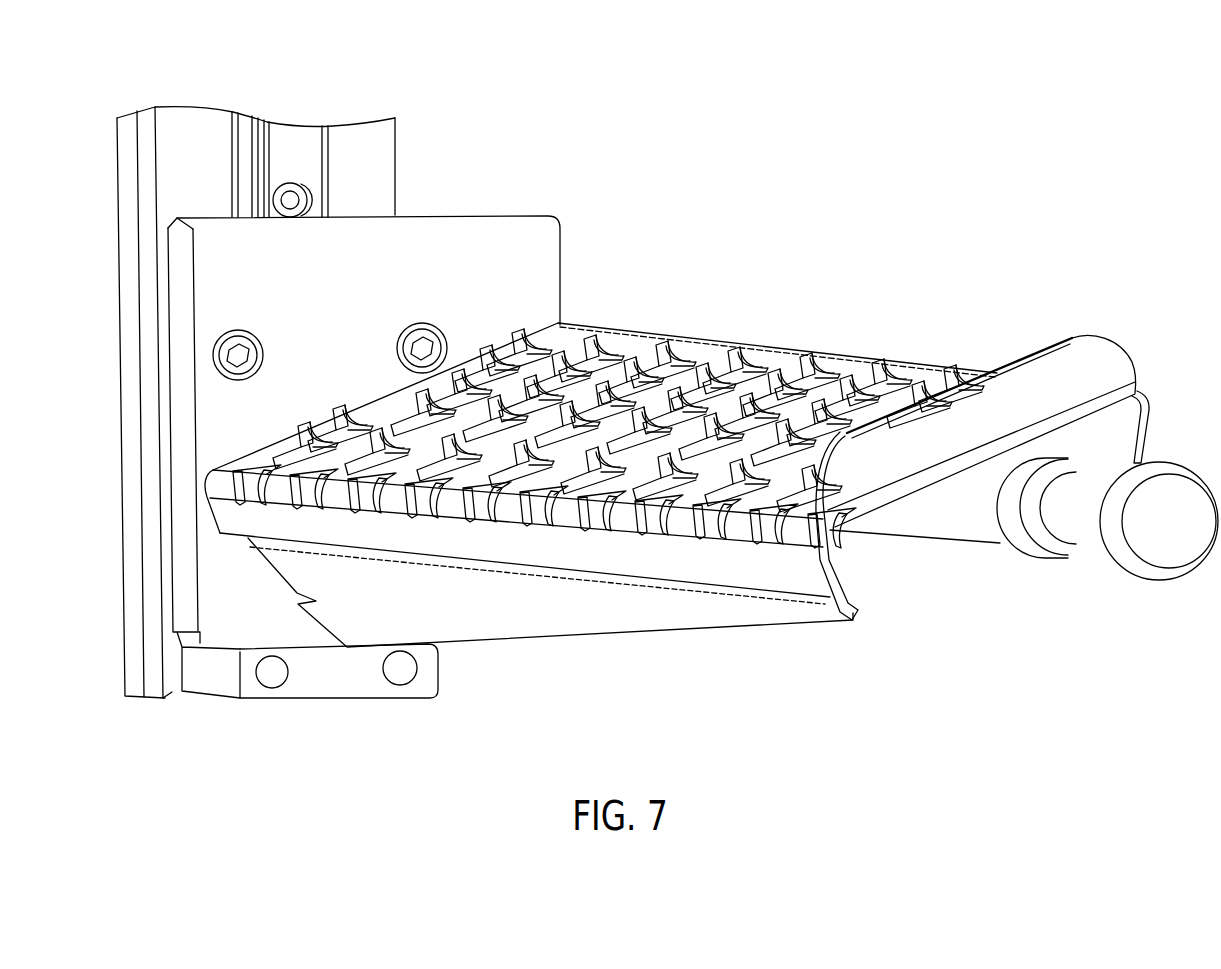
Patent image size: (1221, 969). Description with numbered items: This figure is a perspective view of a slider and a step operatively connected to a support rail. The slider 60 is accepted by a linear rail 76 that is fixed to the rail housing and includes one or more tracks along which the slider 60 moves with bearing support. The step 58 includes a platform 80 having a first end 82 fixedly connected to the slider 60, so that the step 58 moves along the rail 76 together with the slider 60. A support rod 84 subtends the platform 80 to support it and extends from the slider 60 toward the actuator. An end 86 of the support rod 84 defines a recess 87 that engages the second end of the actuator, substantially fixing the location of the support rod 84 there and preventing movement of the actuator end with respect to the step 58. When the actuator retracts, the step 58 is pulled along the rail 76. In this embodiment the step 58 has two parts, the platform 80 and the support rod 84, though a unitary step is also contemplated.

The step 58 is at (898, 207).
The slider 60 is at (508, 230).
The linear rail 76 is at (293, 138).
The platform 80 is at (708, 357).
The first end 82 is at (318, 633).
The support rod 84 is at (967, 521).
The end 86 is at (1107, 433).
The recess 87 is at (1083, 523).